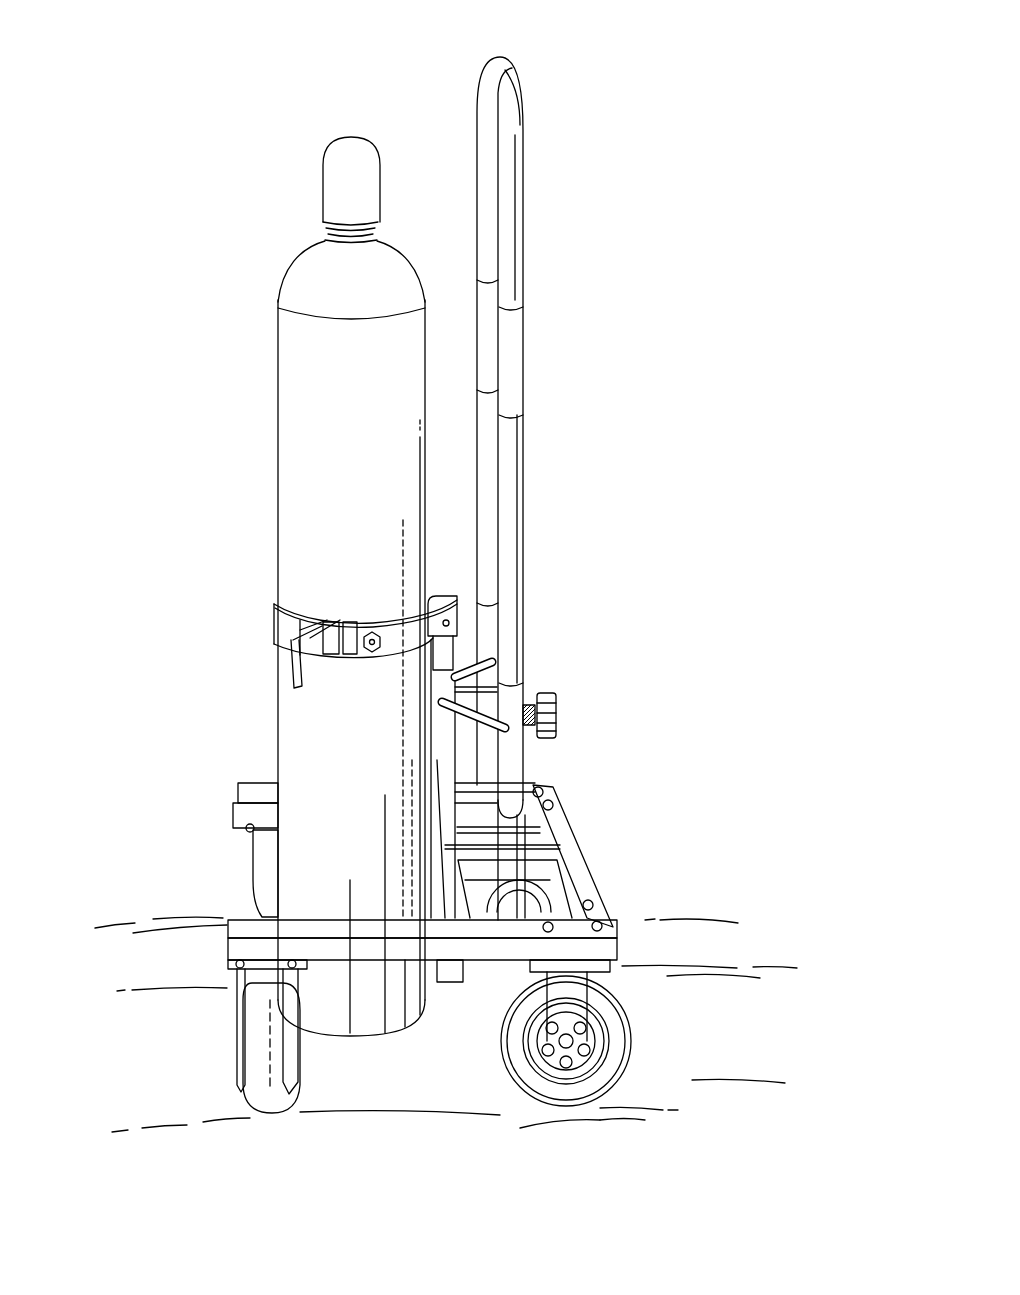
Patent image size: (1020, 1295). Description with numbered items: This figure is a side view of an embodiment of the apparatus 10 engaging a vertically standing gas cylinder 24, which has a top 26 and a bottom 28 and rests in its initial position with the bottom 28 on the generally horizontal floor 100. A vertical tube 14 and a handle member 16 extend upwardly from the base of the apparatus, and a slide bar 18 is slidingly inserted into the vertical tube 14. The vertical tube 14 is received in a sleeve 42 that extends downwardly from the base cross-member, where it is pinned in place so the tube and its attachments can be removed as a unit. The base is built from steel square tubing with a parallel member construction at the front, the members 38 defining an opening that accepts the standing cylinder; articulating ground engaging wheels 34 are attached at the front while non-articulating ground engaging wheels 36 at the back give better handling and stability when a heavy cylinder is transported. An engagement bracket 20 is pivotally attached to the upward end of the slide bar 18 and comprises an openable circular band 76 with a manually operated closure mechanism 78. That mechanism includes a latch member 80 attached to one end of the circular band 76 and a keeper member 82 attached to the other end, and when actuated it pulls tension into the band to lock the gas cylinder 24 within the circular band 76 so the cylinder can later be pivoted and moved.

The apparatus 10 is at (548, 72).
The vertical tube 14 is at (468, 742).
The handle member 16 is at (526, 490).
The slide bar 18 is at (462, 652).
The engagement bracket 20 is at (436, 557).
The gas cylinder 24 is at (290, 213).
The top 26 is at (351, 137).
The bottom 28 is at (357, 1036).
The articulating ground engaging wheels 34 is at (250, 1110).
The non-articulating ground engaging wheels 36 is at (633, 1053).
The members 38 is at (238, 790).
The sleeve 42 is at (448, 980).
The openable circular band 76 is at (275, 625).
The manually operated closure mechanism 78 is at (362, 660).
The latch member 80 is at (282, 680).
The keeper member 82 is at (365, 632).
The floor 100 is at (125, 1112).